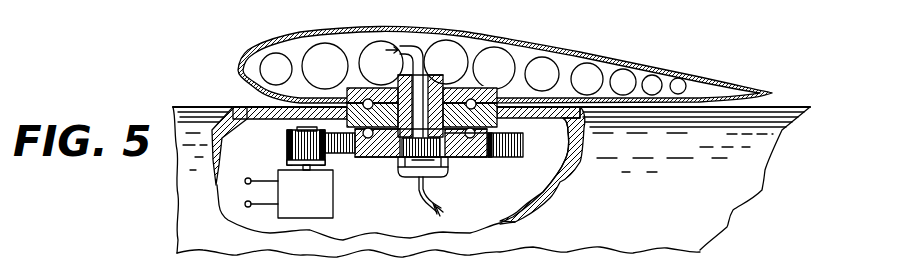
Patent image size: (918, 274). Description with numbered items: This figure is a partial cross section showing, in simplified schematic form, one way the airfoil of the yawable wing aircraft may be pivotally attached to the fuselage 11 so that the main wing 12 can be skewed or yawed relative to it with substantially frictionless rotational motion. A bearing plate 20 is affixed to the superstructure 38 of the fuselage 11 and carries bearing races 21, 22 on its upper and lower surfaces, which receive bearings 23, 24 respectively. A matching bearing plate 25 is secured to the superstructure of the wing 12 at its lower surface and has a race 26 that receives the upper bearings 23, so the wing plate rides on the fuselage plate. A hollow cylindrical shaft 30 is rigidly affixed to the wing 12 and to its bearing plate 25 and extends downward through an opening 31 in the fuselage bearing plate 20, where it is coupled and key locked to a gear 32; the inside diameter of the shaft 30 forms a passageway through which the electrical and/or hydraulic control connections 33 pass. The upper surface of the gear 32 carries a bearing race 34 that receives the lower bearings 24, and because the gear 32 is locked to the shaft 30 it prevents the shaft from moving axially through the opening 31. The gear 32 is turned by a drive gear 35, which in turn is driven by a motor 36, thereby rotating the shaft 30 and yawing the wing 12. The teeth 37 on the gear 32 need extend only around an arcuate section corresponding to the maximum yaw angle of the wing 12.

The fuselage 11 is at (220, 106).
The main wing 12 is at (295, 47).
The bearing plate 20 is at (497, 127).
The bearing race 21 is at (468, 138).
The bearing race 22 is at (489, 150).
The bearings 23 is at (478, 90).
The bearings 24 is at (472, 140).
The bearing plate 25 is at (357, 88).
The race 26 is at (364, 101).
The cylindrical shaft 30 is at (443, 47).
The opening 31 is at (392, 88).
The gear 32 is at (396, 167).
The control connections 33 is at (424, 194).
The bearing race 34 is at (367, 157).
The drive gear 35 is at (287, 143).
The motor 36 is at (278, 172).
The teeth 37 is at (338, 156).
The superstructure 38 is at (537, 107).